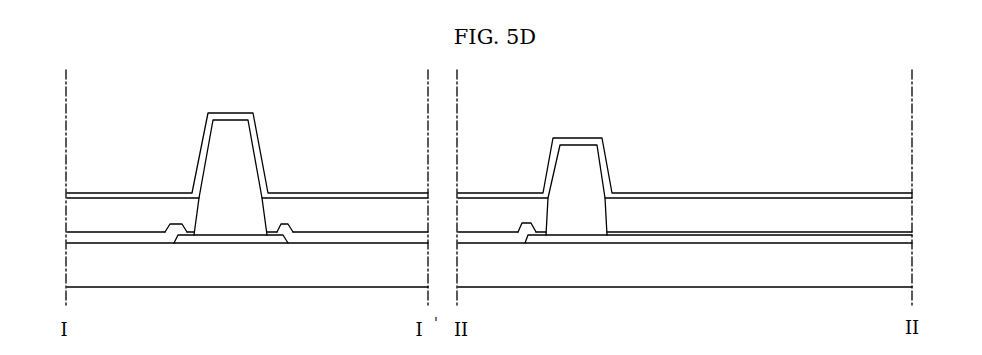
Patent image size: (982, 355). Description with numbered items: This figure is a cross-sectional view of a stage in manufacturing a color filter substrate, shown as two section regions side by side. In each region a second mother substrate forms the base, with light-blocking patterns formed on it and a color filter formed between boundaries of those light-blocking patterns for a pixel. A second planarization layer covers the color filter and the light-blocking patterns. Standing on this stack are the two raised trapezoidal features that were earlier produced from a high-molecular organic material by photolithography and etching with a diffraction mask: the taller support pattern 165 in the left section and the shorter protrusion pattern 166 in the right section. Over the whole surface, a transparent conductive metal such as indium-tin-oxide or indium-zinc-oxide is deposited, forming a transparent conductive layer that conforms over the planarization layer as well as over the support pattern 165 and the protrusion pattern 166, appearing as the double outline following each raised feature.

The support pattern 165 is at (250, 228).
The protrusion pattern 166 is at (577, 227).